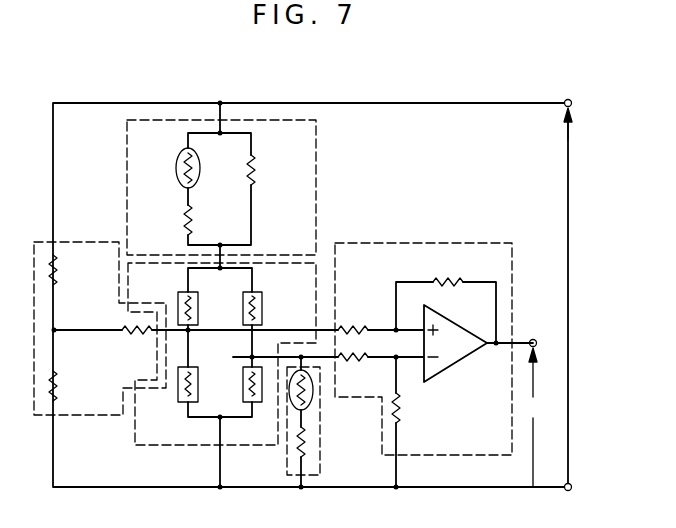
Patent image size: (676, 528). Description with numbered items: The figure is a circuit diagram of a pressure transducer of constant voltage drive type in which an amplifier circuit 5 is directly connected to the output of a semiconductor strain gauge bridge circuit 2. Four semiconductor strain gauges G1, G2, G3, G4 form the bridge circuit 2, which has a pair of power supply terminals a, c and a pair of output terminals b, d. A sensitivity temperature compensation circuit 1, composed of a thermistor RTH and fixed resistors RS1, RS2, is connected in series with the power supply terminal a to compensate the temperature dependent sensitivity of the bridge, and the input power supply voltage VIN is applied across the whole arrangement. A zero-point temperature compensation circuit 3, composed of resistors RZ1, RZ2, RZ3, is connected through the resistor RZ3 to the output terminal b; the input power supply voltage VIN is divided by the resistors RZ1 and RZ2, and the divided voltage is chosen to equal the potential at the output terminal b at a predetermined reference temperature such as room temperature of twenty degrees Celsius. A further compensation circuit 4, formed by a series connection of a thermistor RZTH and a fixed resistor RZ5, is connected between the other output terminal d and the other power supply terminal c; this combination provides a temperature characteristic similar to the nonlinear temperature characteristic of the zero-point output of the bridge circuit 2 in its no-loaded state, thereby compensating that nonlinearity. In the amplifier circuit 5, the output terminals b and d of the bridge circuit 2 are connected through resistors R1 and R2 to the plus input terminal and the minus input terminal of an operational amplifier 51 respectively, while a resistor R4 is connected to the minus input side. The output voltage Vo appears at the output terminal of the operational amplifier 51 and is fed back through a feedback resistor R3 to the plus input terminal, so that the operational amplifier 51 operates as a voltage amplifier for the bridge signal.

The sensitivity temperature compensation circuit 1 is at (318, 172).
The bridge circuit 2 is at (320, 280).
The zero-point temperature compensation circuit 3 is at (92, 240).
The nonlinearity compensation circuit 4 is at (285, 467).
The amplifier circuit 5 is at (443, 242).
The operational amplifier 51 is at (460, 361).
The thermistor RTH is at (177, 170).
The fixed resistor RS1 is at (184, 217).
The fixed resistor RS2 is at (257, 176).
The semiconductor strain gauge G1 is at (180, 305).
The semiconductor strain gauge G2 is at (178, 396).
The semiconductor strain gauge G3 is at (261, 407).
The semiconductor strain gauge G4 is at (263, 310).
The power supply terminal a is at (220, 270).
The output terminal b is at (189, 332).
The power supply terminal c is at (220, 416).
The output terminal d is at (251, 356).
The resistor RZ1 is at (58, 273).
The resistor RZ2 is at (58, 388).
The resistor RZ3 is at (143, 337).
The thermistor RZTH is at (313, 398).
The fixed resistor RZ5 is at (307, 438).
The resistor R1 is at (362, 318).
The resistor R2 is at (344, 362).
The feedback resistor R3 is at (450, 280).
The resistor R4 is at (403, 411).
The input power supply voltage VIN is at (567, 185).
The output voltage Vo is at (535, 414).